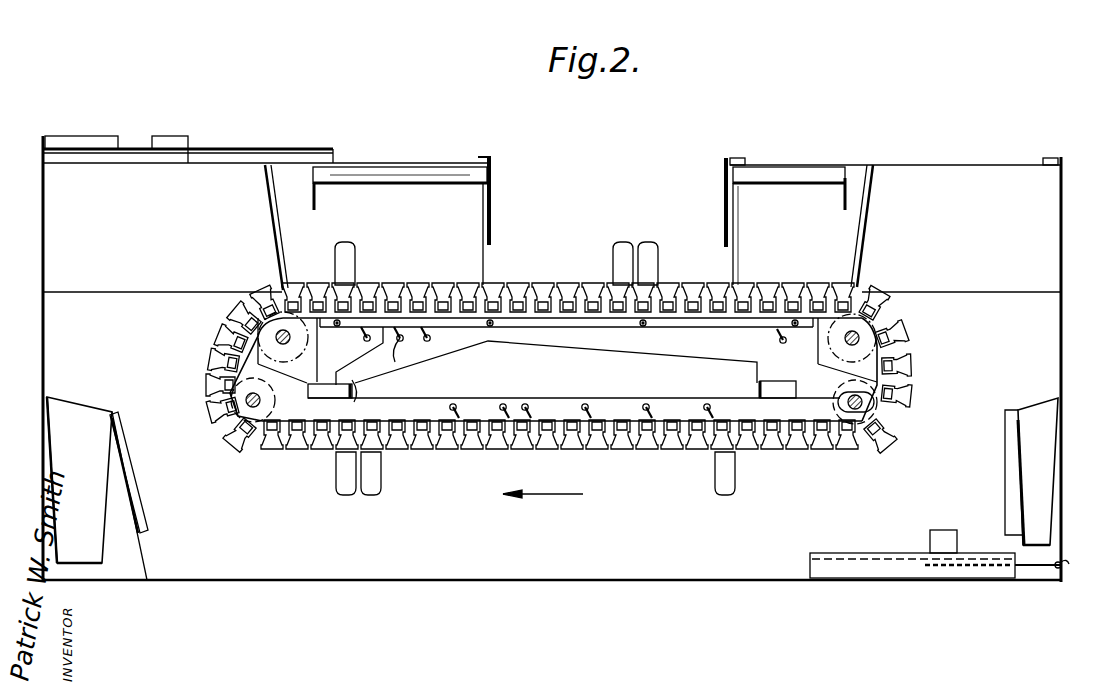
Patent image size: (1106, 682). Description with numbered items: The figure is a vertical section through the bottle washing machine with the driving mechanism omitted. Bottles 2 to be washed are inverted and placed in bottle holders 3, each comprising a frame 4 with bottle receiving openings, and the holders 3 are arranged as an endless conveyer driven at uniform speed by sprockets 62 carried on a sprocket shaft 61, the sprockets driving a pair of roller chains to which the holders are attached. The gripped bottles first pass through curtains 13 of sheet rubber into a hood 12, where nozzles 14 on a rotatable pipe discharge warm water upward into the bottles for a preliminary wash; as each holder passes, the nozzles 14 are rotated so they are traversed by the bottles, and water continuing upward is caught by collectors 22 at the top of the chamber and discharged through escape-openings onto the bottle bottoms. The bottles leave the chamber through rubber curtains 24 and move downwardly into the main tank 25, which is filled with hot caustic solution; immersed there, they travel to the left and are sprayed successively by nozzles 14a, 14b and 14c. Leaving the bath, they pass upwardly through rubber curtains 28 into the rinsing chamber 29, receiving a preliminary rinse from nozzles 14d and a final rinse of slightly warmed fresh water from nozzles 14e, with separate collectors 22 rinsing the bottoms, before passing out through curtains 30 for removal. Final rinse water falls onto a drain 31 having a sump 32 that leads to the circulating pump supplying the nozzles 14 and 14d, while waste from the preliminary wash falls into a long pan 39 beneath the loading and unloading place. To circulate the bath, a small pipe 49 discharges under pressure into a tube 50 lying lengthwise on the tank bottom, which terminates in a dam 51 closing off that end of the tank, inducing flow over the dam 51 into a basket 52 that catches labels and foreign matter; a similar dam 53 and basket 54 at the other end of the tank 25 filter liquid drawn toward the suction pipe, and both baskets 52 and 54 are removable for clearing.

The bottles 2 is at (646, 244).
The bottle holders 3 is at (695, 284).
The frame 4 is at (557, 452).
The hood 12 is at (774, 235).
The curtains 13 is at (725, 210).
The nozzles 14 is at (777, 337).
The spray nozzles 14a is at (702, 411).
The spray nozzles 14b is at (580, 411).
The spray nozzles 14c is at (455, 411).
The nozzles 14d is at (363, 342).
The nozzles 14e is at (427, 342).
The collectors 22 is at (400, 180).
The rubber curtains 24 is at (876, 220).
The main tank 25 is at (584, 596).
The rubber curtains 28 is at (269, 242).
The rinsing chamber 29 is at (309, 212).
The curtains 30 is at (493, 220).
The drain 31 is at (381, 360).
The sump 32 is at (340, 400).
The pan 39 is at (575, 367).
The pipe 49 is at (1045, 570).
The tube 50 is at (867, 557).
The dam 51 is at (1016, 482).
The basket 52 is at (1048, 458).
The dam 53 is at (137, 500).
The basket 54 is at (79, 480).
The sprocket shaft 61 is at (262, 400).
The sprockets 62 is at (838, 404).